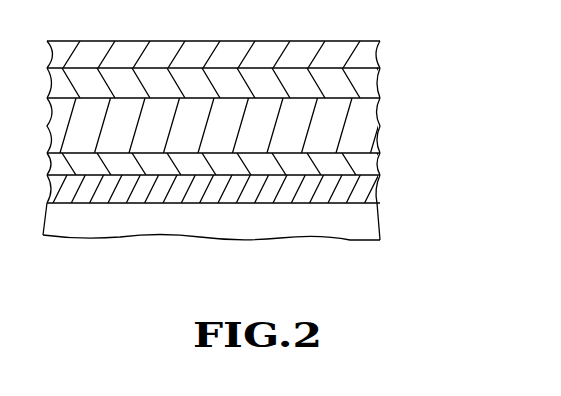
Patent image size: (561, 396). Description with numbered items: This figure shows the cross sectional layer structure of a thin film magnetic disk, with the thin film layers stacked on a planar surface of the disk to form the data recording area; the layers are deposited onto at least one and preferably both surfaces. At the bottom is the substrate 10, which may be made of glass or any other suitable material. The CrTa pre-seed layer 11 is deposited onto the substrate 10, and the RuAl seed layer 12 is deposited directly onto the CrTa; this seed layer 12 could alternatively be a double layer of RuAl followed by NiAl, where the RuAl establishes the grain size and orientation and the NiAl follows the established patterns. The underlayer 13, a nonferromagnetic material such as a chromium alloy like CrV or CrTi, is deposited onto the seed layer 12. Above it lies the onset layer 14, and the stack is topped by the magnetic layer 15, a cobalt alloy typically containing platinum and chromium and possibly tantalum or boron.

The substrate 10 is at (387, 232).
The CrTa pre-seed layer 11 is at (380, 190).
The RuAl seed layer 12 is at (387, 169).
The underlayer 13 is at (402, 130).
The onset layer 14 is at (387, 90).
The magnetic layer 15 is at (387, 58).